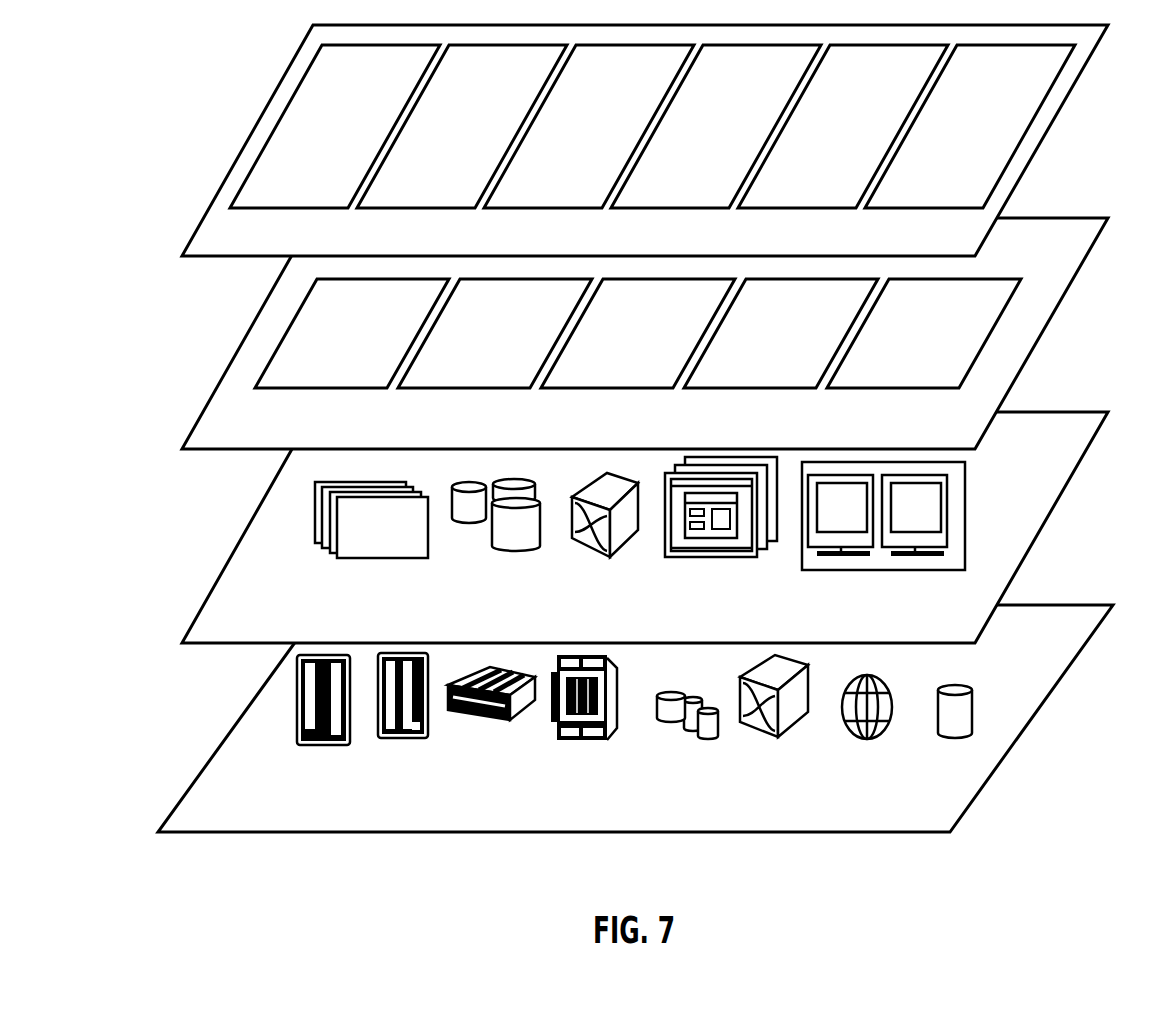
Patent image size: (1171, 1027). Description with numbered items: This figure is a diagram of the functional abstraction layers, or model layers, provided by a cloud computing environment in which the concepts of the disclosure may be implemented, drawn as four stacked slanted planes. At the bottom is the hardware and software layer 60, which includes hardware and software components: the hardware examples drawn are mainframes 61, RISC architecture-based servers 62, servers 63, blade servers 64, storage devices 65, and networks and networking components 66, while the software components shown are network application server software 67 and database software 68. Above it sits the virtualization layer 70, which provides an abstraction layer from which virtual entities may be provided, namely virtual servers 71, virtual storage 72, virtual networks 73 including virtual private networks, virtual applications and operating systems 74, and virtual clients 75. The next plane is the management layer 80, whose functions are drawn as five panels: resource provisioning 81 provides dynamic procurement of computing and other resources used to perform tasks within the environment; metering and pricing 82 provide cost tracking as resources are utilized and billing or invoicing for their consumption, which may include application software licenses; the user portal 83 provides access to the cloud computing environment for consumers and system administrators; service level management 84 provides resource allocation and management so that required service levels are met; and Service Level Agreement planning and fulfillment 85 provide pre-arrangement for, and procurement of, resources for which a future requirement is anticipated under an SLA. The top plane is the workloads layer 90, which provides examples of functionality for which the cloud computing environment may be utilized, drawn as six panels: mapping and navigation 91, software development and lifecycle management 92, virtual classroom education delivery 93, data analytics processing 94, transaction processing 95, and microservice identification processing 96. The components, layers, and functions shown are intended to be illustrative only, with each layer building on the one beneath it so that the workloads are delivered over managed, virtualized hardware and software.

The hardware and software layer 60 is at (230, 833).
The mainframes 61 is at (320, 746).
The RISC architecture-based servers 62 is at (408, 739).
The servers 63 is at (493, 721).
The blade servers 64 is at (590, 740).
The storage devices 65 is at (685, 738).
The networks and networking components 66 is at (772, 736).
The network application server software 67 is at (868, 739).
The database software 68 is at (957, 738).
The virtualization layer 70 is at (228, 644).
The virtual servers 71 is at (385, 558).
The virtual storage 72 is at (520, 551).
The virtual networks 73 is at (613, 557).
The virtual applications and operating systems 74 is at (718, 557).
The virtual clients 75 is at (888, 571).
The management layer 80 is at (228, 450).
The resource provisioning 81 is at (328, 348).
The metering and pricing 82 is at (471, 348).
The user portal 83 is at (614, 348).
The service level management 84 is at (757, 348).
The Service Level Agreement (SLA) planning and fulfillment 85 is at (900, 348).
The workloads layer 90 is at (223, 257).
The mapping and navigation 91 is at (326, 132).
The software development and lifecycle management 92 is at (453, 132).
The virtual classroom education delivery 93 is at (580, 132).
The data analytics processing 94 is at (707, 132).
The transaction processing 95 is at (834, 132).
The microservice identification processing 96 is at (961, 132).